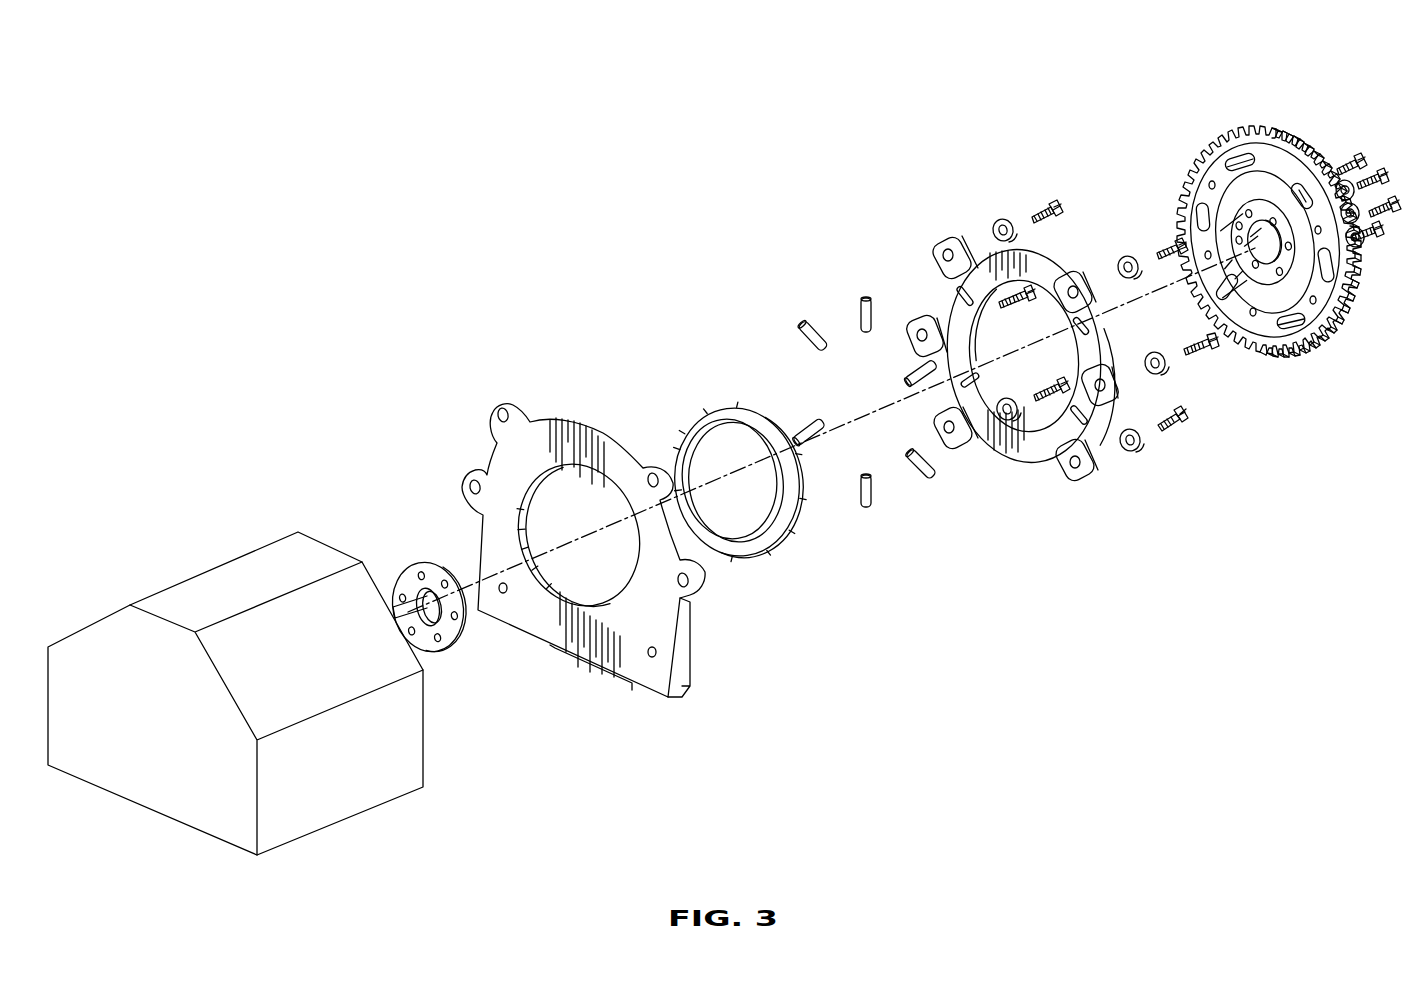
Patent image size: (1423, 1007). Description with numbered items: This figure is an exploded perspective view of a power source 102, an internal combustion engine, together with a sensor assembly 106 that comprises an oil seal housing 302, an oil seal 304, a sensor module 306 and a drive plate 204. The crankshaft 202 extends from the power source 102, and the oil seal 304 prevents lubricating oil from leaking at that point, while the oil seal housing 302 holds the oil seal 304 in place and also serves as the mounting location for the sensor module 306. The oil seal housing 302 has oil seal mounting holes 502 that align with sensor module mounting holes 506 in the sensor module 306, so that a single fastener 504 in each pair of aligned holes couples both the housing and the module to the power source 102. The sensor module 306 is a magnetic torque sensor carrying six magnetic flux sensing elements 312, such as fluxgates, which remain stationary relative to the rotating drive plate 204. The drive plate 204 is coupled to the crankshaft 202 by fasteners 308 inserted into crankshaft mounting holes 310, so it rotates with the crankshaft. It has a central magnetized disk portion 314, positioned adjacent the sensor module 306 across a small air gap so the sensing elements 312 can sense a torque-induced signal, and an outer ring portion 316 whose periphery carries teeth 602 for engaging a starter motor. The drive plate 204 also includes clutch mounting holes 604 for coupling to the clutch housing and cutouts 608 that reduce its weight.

The power source 102 is at (233, 557).
The sensor assembly 106 is at (806, 210).
The crankshaft 202 is at (430, 650).
The drive plate 204 is at (1251, 231).
The oil seal housing 302 is at (557, 414).
The oil seal 304 is at (712, 408).
The sensor module 306 is at (1018, 367).
The fasteners 308 is at (1387, 165).
The crankshaft mounting holes 310 is at (1240, 193).
The magnetic flux sensing elements 312 is at (928, 480).
The magnetized disk portion 314 is at (1235, 160).
The ring portion 316 is at (1288, 172).
The oil seal mounting hole 502 is at (657, 652).
The fastener 504 is at (1186, 432).
The sensor module mounting hole 506 is at (1079, 478).
The teeth 602 is at (1347, 330).
The clutch mounting holes 604 is at (1253, 316).
The cutouts 608 is at (1292, 328).